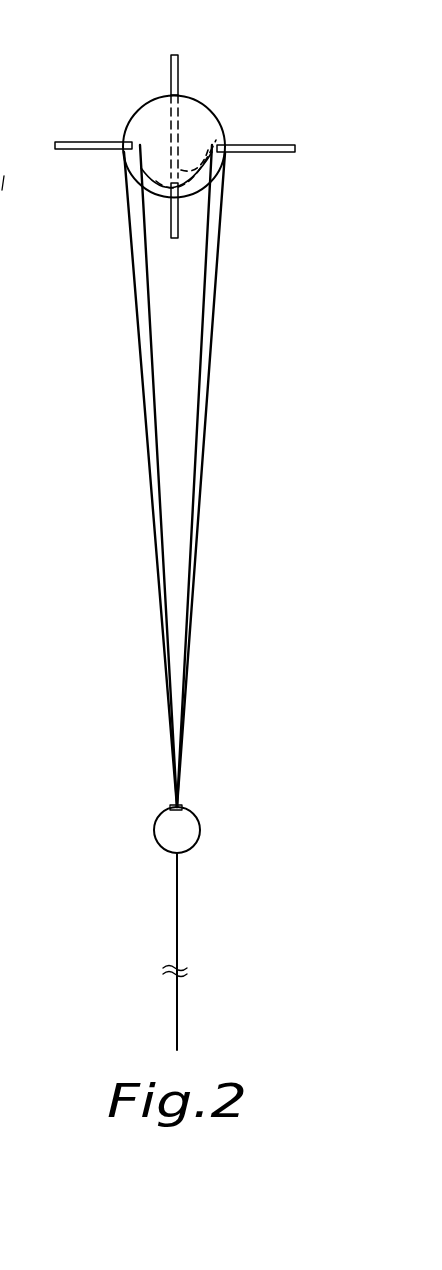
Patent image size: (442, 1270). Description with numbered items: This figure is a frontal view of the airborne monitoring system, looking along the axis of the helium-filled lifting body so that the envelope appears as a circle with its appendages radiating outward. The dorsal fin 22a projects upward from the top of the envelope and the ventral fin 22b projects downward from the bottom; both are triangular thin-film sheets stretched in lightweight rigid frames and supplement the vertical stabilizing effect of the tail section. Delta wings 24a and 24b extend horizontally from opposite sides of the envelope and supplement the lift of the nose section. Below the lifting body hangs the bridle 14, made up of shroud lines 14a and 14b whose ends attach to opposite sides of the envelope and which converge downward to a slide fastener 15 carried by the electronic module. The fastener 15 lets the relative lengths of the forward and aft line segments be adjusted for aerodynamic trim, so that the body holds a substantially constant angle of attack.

The bridle 14 is at (174, 476).
The shroud line 14a is at (202, 335).
The shroud line 14b is at (148, 331).
The slide fastener 15 is at (183, 808).
The dorsal fin 22a is at (178, 64).
The ventral fin 22b is at (180, 222).
The delta wing 24a is at (252, 145).
The delta wing 24b is at (100, 142).